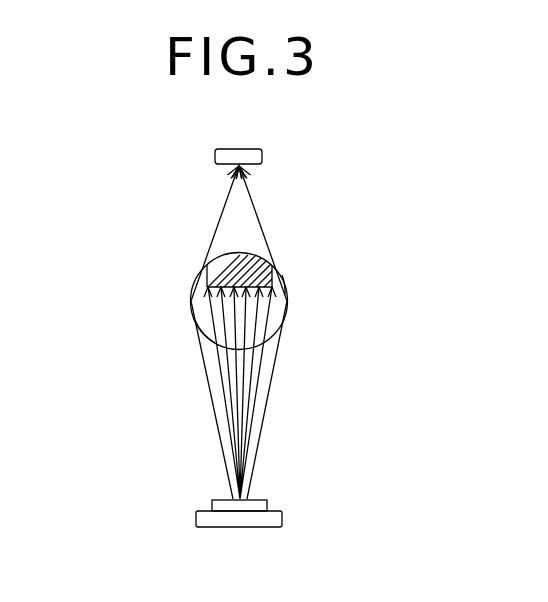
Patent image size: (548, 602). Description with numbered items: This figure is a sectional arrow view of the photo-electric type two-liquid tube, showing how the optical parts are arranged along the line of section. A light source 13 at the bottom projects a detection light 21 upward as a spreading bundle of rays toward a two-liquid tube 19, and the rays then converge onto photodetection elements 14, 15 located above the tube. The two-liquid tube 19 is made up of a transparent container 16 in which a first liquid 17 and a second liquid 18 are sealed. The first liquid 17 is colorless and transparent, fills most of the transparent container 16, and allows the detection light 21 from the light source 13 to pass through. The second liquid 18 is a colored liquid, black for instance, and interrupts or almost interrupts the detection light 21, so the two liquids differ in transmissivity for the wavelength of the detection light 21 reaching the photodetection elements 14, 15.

The light source 13 is at (282, 511).
The photodetection element 14 is at (317, 143).
The photodetection element 15 is at (263, 158).
The transparent container 16 is at (286, 301).
The first liquid 17 is at (200, 318).
The second liquid 18 is at (203, 273).
The two-liquid tube 19 is at (284, 284).
The detection light 21 is at (263, 433).